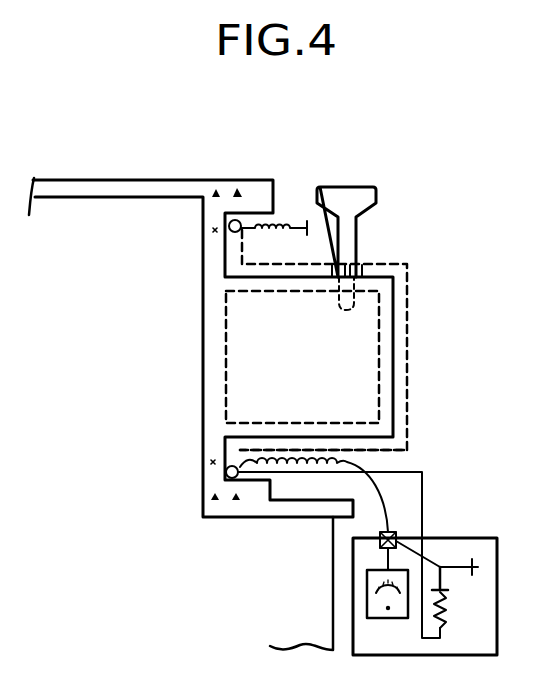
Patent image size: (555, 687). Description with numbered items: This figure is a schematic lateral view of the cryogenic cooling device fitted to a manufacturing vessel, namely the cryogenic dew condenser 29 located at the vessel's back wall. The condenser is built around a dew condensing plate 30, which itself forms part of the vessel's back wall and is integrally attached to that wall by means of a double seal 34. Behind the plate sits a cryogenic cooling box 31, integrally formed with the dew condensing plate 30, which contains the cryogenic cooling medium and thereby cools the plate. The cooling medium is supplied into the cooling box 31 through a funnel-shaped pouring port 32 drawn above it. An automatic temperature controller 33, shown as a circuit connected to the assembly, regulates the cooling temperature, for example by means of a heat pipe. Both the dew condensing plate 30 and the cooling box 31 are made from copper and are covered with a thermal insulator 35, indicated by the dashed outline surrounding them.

The cryogenic dew condenser 29 is at (437, 292).
The dew condensing plate 30 is at (204, 368).
The cryogenic cooling box 31 is at (379, 354).
The funnel-shaped pouring port 32 is at (347, 193).
The automatic temperature controller 33 is at (400, 538).
The double seal 34 is at (216, 191).
The thermal insulator 35 is at (409, 432).